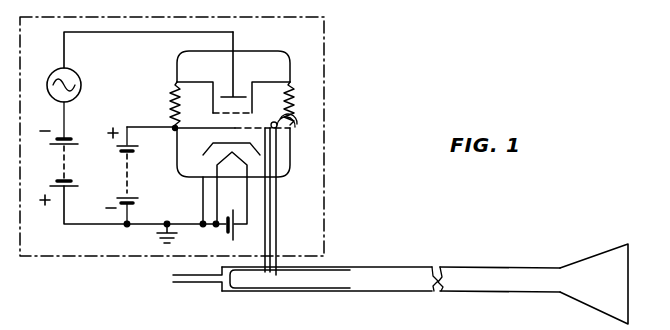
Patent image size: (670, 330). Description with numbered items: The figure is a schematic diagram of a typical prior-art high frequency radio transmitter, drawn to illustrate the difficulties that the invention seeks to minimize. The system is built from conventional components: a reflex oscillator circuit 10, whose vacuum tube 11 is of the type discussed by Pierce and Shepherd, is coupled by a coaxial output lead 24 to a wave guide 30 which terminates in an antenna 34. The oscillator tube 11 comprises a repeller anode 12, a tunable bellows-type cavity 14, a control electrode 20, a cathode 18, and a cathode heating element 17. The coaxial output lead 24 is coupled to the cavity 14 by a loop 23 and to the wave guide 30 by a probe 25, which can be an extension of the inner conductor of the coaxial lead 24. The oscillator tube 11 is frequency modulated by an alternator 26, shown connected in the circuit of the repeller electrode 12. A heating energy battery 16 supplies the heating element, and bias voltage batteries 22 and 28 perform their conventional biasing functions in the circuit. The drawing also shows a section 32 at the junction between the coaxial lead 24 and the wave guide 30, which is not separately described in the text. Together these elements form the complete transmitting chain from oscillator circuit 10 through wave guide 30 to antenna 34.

The reflex oscillator circuit 10 is at (324, 155).
The vacuum tube 11 is at (291, 62).
The repeller anode 12 is at (240, 96).
The tunable cavity 14 is at (330, 113).
The heating energy battery 16 is at (227, 233).
The cathode heating element 17 is at (216, 205).
The cathode 18 is at (203, 187).
The control electrode 20 is at (205, 127).
The bias voltage battery 22 is at (122, 176).
The loop 23 is at (294, 127).
The coaxial output lead 24 is at (276, 195).
The probe 25 is at (273, 272).
The alternator 26 is at (55, 75).
The bias voltage battery 28 is at (58, 168).
The wave guide 30 is at (477, 277).
The coupling section 32 is at (223, 283).
The antenna 34 is at (619, 279).